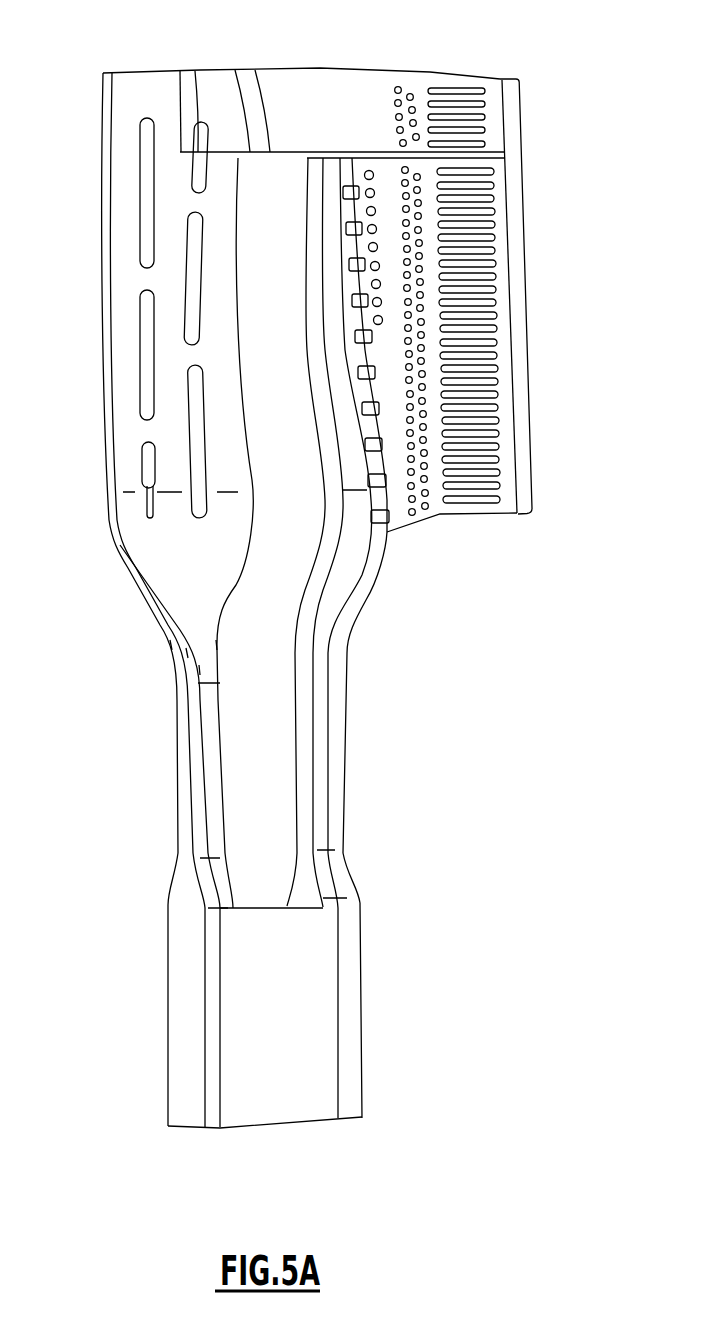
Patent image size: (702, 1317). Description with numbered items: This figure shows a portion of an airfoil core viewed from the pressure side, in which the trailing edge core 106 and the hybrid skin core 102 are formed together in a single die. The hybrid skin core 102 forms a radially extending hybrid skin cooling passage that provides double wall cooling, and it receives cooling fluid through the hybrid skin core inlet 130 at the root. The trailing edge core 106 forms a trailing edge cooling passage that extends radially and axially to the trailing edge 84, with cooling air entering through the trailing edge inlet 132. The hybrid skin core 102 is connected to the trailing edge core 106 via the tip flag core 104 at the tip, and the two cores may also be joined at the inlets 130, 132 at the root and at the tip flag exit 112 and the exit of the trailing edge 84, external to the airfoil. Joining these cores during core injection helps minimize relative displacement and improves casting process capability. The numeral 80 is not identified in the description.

The collar band 80 is at (270, 69).
The trailing edge 84 is at (517, 307).
The hybrid skin core 102 is at (125, 282).
The tip flag core 104 is at (349, 97).
The trailing edge core 106 is at (495, 380).
The tip flag exit 112 is at (505, 110).
The hybrid skin core inlet 130 is at (190, 882).
The trailing edge inlet 132 is at (345, 879).